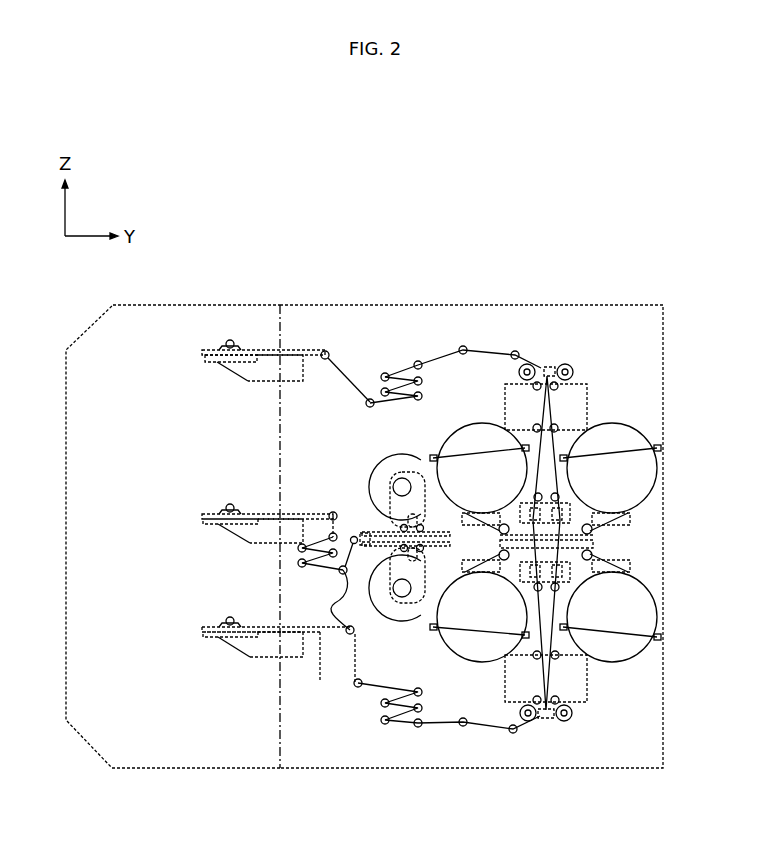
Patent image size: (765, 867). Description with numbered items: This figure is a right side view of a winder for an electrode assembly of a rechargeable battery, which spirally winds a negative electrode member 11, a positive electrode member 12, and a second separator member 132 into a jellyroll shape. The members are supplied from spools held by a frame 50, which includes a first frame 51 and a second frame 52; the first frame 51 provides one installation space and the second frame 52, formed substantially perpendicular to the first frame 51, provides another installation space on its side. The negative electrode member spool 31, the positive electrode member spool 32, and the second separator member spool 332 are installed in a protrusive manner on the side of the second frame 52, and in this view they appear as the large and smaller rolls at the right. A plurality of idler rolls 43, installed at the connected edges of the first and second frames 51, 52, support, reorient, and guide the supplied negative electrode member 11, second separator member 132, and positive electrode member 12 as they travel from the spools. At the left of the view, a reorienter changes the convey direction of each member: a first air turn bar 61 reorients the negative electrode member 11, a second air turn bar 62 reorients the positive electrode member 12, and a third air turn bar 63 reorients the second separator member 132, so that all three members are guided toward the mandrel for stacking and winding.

The negative electrode member 11 is at (320, 682).
The positive electrode member 12 is at (305, 352).
The negative electrode member spool 31 is at (632, 608).
The positive electrode member spool 32 is at (633, 473).
The idler rolls 43 is at (418, 363).
The frame 50 is at (364, 585).
The first frame 51 is at (235, 745).
The second frame 52 is at (471, 566).
The first air turn bar 61 is at (226, 619).
The second air turn bar 62 is at (226, 343).
The third air turn bar 63 is at (242, 489).
The second separator member 132 is at (302, 513).
The second separator member spool 332 is at (380, 472).